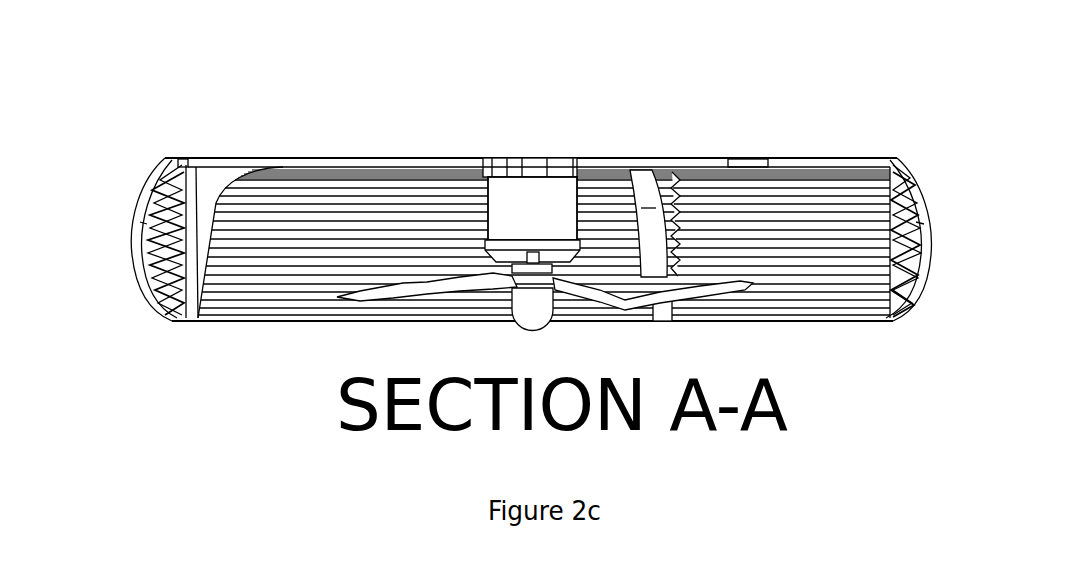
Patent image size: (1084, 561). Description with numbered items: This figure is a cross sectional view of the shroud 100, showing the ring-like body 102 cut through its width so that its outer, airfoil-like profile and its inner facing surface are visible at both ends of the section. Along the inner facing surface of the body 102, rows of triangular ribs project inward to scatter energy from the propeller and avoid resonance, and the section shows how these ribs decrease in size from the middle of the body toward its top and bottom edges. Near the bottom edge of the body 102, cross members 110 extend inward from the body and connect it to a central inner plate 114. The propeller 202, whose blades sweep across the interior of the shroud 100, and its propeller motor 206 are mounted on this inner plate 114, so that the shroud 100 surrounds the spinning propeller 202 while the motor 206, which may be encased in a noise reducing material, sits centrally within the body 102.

The shroud 100 is at (250, 98).
The body 102 is at (158, 167).
The cross members 110 is at (389, 165).
The inner plate 114 is at (548, 165).
The propeller 202 is at (481, 283).
The propeller motor 206 is at (514, 220).